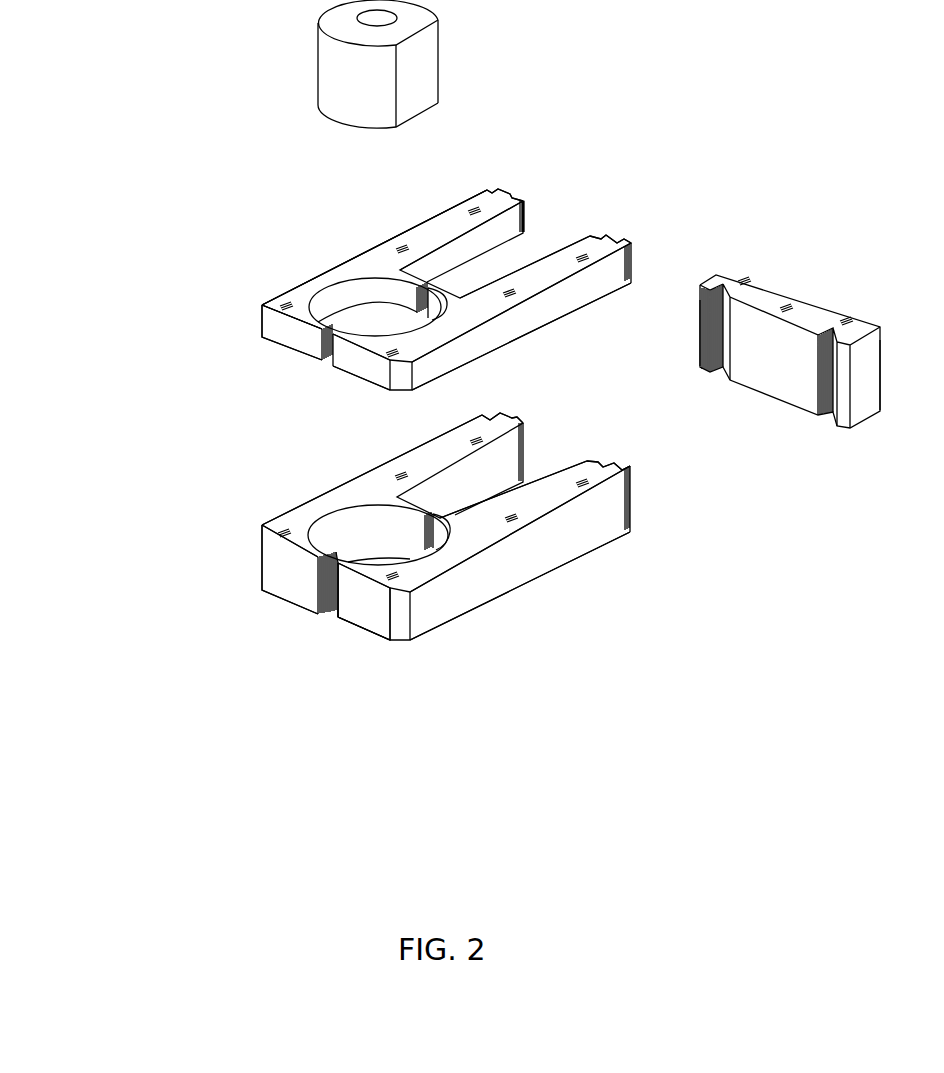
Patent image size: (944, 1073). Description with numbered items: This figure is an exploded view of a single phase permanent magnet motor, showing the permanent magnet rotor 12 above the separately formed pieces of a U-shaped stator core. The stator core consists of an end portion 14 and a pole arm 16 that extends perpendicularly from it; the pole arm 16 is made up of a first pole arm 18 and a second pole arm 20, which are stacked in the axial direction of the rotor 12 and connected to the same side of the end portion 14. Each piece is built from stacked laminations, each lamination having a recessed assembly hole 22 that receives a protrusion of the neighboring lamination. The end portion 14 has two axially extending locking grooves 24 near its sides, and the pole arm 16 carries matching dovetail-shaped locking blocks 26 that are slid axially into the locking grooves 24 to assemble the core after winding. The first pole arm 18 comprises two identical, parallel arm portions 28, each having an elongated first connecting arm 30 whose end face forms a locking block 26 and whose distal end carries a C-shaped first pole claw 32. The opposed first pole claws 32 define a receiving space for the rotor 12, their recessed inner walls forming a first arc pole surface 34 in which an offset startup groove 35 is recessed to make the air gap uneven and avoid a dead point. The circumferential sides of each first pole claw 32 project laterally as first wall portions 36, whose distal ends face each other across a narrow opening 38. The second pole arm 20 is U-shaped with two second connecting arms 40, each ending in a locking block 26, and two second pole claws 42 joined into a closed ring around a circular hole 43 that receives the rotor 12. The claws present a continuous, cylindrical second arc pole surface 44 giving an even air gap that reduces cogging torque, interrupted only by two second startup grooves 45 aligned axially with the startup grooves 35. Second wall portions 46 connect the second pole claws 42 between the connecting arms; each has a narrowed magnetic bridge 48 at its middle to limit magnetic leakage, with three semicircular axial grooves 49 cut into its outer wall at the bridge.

The permanent magnet rotor 12 is at (316, 53).
The end portion 14 is at (773, 277).
The pole arm 16 is at (72, 338).
The first pole arm 18 is at (370, 277).
The second pole arm 20 is at (361, 562).
The assembly hole 22 is at (477, 212).
The locking groove 24 is at (833, 423).
The locking block 26 is at (617, 235).
The arm portion 28 is at (553, 268).
The first connecting arm 30 is at (440, 227).
The first pole claw 32 is at (320, 275).
The first arc pole surface 34 is at (367, 293).
The startup groove 35 is at (305, 313).
The first wall portion 36 is at (300, 336).
The opening 38 is at (432, 291).
The second connecting arm 40 is at (533, 510).
The second pole claw 42 is at (427, 582).
The circular hole 43 is at (373, 560).
The second arc pole surface 44 is at (367, 517).
The second startup groove 45 is at (307, 543).
The second wall portion 46 is at (293, 583).
The magnetic bridge 48 is at (335, 593).
The groove 49 is at (325, 615).